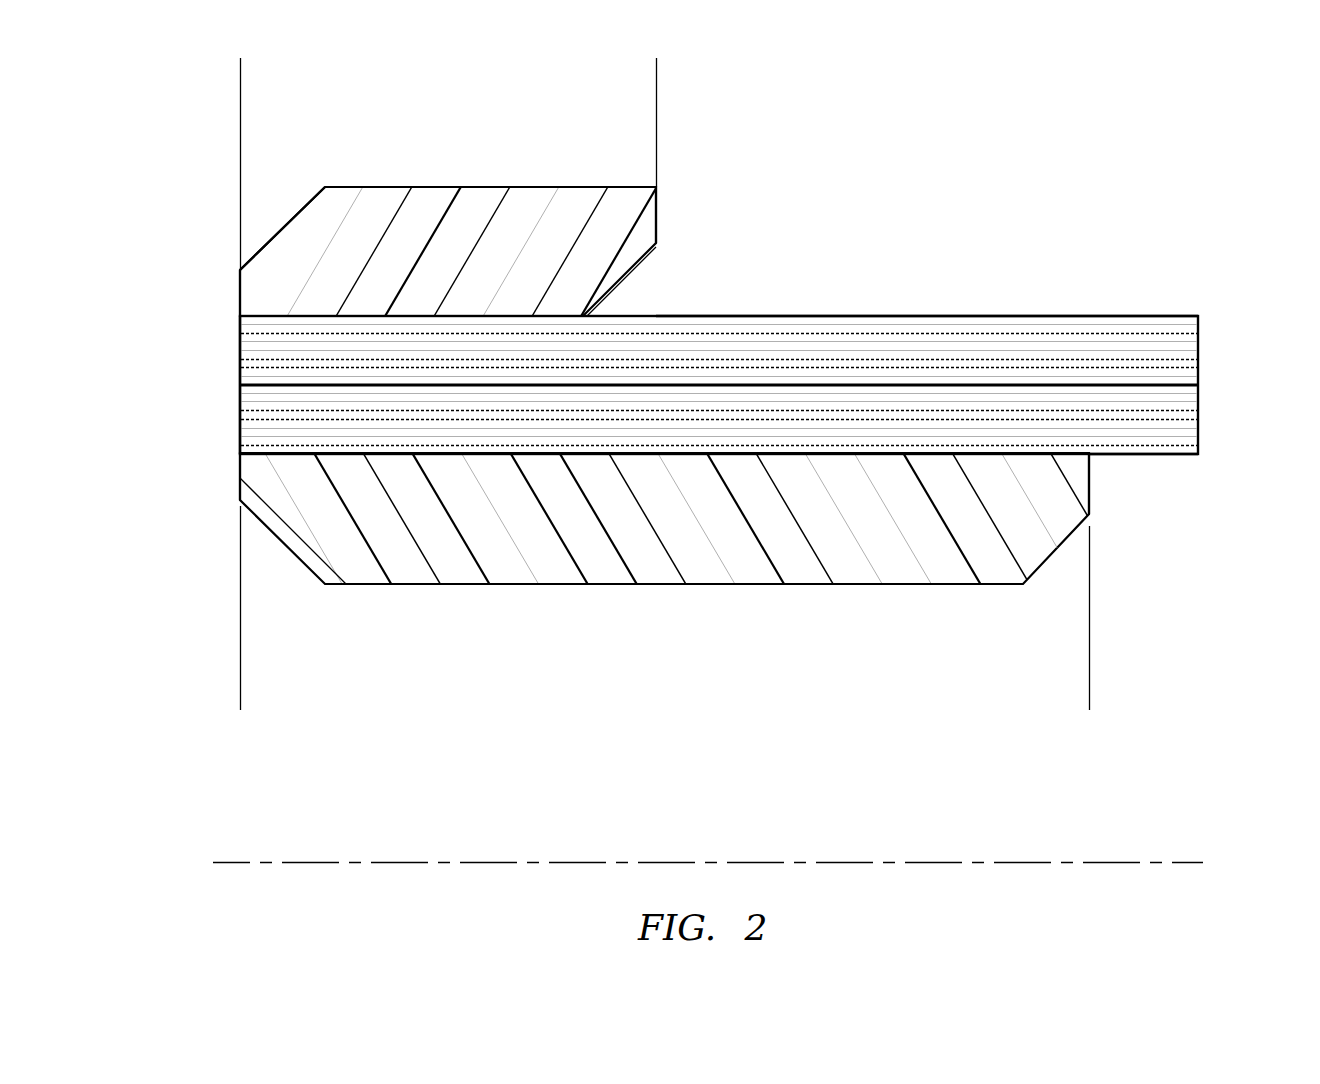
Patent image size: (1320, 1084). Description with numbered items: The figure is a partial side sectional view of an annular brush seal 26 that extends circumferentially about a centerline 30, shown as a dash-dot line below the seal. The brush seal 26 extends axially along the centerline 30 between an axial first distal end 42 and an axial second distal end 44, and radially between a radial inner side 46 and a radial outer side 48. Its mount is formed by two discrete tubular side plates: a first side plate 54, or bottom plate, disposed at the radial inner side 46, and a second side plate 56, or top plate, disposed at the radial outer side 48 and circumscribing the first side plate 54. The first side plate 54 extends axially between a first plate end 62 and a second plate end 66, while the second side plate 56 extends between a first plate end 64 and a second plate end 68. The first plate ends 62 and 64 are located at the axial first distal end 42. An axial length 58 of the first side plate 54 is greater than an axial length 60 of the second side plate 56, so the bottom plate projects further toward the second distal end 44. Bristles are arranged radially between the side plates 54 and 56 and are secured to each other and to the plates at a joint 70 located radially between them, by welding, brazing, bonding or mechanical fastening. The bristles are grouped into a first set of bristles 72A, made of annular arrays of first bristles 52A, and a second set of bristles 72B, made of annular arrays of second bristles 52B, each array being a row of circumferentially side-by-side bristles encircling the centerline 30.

The brush seal 26 is at (881, 154).
The centerline 30 is at (1188, 861).
The axial first distal end 42 is at (240, 300).
The axial second distal end 44 is at (1198, 345).
The radial inner side 46 is at (592, 586).
The radial outer side 48 is at (570, 187).
The first bristles 52A is at (1047, 342).
The second bristles 52B is at (1178, 428).
The first side plate 54 is at (431, 588).
The second side plate 56 is at (464, 184).
The axial length of the first side plate 58 is at (243, 698).
The axial length of the second side plate 60 is at (654, 72).
The first plate end of the first side plate 62 is at (240, 474).
The first plate end of the second side plate 64 is at (240, 278).
The second plate end of the first side plate 66 is at (1091, 503).
The second plate end of the second side plate 68 is at (657, 210).
The joint 70 is at (213, 396).
The first set of bristles 72A is at (1128, 313).
The second set of bristles 72B is at (1126, 457).